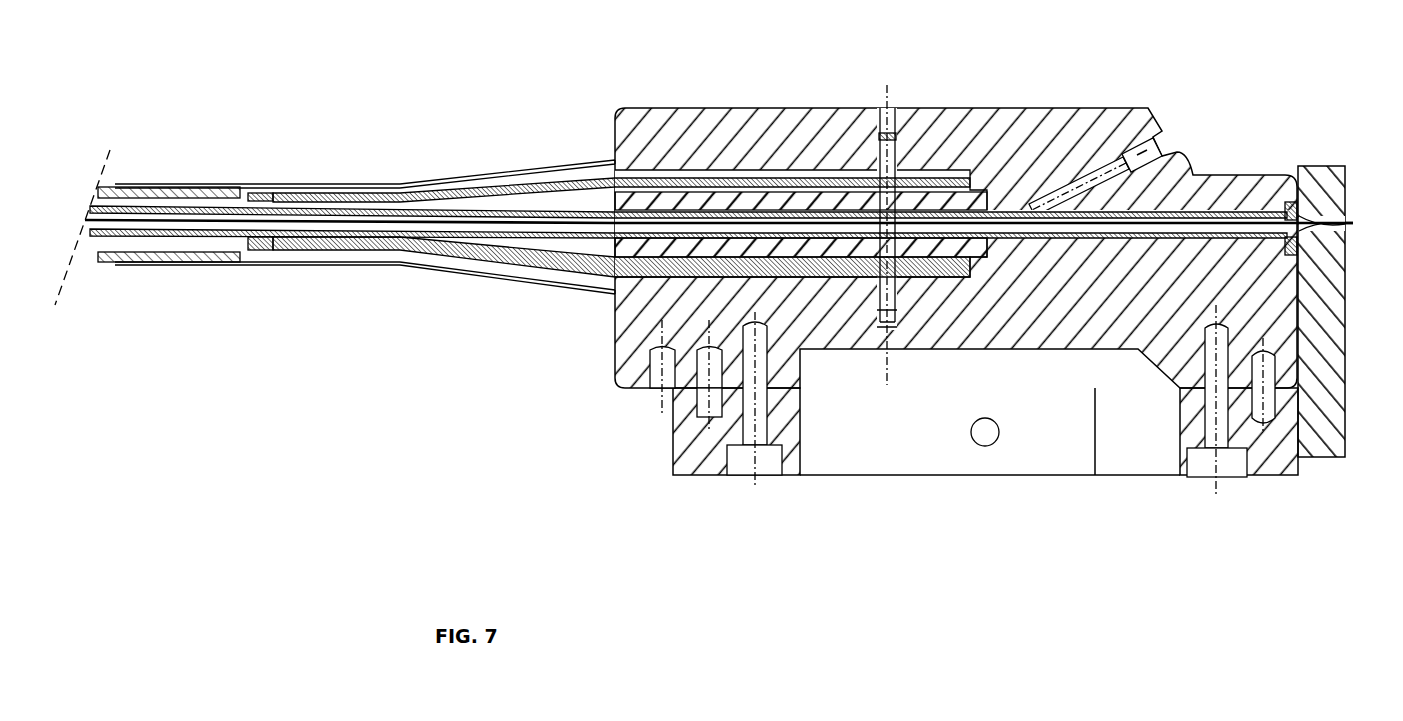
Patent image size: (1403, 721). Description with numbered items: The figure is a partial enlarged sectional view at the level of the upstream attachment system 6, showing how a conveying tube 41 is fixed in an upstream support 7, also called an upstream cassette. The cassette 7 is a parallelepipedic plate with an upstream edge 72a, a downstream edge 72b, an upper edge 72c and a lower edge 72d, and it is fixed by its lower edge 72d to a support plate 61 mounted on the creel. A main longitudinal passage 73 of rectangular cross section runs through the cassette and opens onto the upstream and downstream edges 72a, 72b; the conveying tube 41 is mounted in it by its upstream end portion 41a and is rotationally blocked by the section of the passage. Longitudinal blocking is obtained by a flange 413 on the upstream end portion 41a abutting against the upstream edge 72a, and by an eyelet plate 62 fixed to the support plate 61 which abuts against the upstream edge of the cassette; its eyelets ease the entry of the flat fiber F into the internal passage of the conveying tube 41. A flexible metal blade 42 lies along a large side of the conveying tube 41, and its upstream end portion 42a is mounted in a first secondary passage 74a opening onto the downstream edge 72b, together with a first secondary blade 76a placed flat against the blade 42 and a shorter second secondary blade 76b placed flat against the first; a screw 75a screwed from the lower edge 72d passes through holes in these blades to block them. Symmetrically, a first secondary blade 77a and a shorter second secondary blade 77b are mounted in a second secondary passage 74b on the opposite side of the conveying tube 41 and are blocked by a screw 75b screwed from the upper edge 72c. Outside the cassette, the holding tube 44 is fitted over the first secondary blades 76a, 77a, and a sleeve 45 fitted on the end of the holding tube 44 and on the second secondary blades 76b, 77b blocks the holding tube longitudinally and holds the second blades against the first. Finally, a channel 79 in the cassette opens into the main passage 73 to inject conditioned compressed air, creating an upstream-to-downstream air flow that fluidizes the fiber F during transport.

The upstream attachment system 6 is at (758, 100).
The upstream support 7 is at (670, 107).
The conveying tube 41 is at (135, 206).
The upstream end portion of the conveying tube 41a is at (1037, 238).
The flexible metal blade 42 is at (128, 263).
The upstream end portion of the flexible blade 42a is at (600, 294).
The holding tube 44 is at (197, 187).
The sleeve 45 is at (490, 172).
The support plate 61 is at (707, 476).
The eyelet plate 62 is at (1340, 440).
The upstream edge 72a is at (1297, 325).
The downstream edge 72b is at (615, 370).
The upper edge 72c is at (1055, 108).
The lower edge 72d is at (640, 390).
The main longitudinal passage 73 is at (812, 205).
The first secondary passage 74a is at (640, 292).
The second secondary passage 74b is at (640, 166).
The screw 75a is at (868, 343).
The screw 75b is at (893, 130).
The first secondary blade 76a is at (258, 251).
The second secondary blade 76b is at (322, 251).
The first secondary blade 77a is at (253, 193).
The second secondary blade 77b is at (300, 193).
The channel 79 is at (1093, 167).
The flange 413 is at (1290, 200).
The flat fiber F is at (1356, 222).